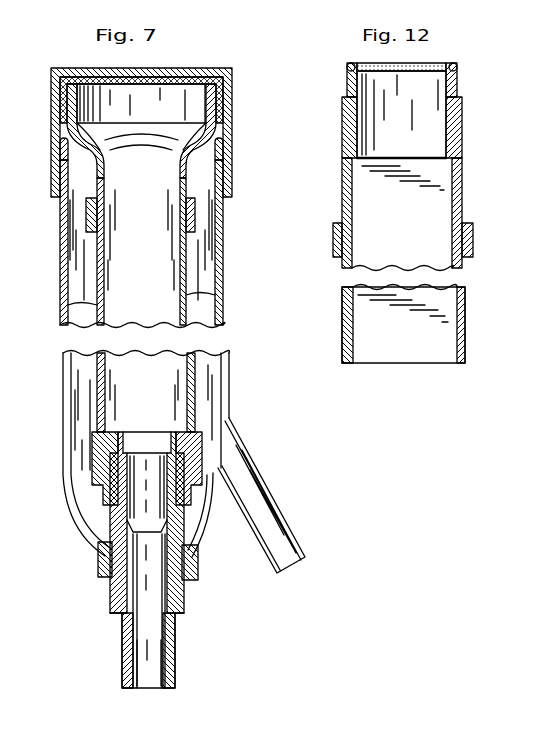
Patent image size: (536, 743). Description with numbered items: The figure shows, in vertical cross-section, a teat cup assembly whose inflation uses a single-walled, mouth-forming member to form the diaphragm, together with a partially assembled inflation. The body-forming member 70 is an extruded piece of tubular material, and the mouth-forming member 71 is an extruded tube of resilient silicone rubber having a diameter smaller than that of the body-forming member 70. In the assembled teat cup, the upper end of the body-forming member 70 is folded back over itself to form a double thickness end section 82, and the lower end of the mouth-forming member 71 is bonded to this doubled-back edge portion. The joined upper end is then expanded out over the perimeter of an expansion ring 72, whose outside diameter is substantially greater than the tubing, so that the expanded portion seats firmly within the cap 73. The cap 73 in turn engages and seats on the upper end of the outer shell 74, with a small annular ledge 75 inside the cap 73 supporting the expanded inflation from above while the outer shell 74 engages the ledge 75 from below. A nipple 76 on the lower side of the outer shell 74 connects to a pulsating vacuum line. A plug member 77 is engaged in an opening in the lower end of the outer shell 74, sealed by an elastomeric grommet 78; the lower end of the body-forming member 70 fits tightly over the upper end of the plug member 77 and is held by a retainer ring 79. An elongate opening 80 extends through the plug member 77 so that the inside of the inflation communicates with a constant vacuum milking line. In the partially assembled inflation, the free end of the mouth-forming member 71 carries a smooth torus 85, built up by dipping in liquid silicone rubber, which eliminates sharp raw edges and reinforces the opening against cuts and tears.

In FIG. 7, the body-forming member 70 is at (97, 306).
In FIG. 12, the body-forming member 70 is at (342, 210).
In FIG. 7, the mouth-forming member 71 is at (96, 68).
In FIG. 12, the mouth-forming member 71 is at (342, 88).
In FIG. 7, the expansion ring 72 is at (75, 120).
In FIG. 7, the cap 73 is at (56, 130).
In FIG. 7, the outer shell 74 is at (60, 236).
In FIG. 7, the annular ledge 75 is at (67, 160).
In FIG. 7, the nipple 76 is at (285, 505).
In FIG. 7, the plug member 77 is at (136, 440).
In FIG. 7, the grommet 78 is at (200, 588).
In FIG. 7, the retainer ring 79 is at (93, 478).
In FIG. 7, the elongate opening 80 is at (155, 689).
In FIG. 7, the double thickness end section 82 is at (60, 93).
In FIG. 12, the torus 85 is at (351, 62).